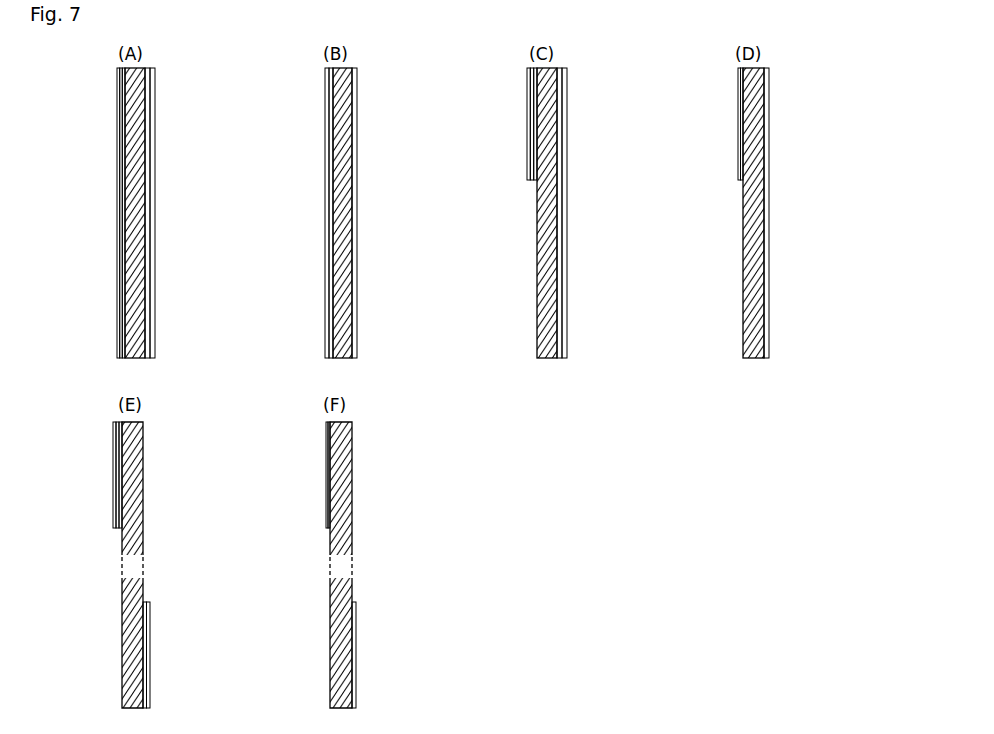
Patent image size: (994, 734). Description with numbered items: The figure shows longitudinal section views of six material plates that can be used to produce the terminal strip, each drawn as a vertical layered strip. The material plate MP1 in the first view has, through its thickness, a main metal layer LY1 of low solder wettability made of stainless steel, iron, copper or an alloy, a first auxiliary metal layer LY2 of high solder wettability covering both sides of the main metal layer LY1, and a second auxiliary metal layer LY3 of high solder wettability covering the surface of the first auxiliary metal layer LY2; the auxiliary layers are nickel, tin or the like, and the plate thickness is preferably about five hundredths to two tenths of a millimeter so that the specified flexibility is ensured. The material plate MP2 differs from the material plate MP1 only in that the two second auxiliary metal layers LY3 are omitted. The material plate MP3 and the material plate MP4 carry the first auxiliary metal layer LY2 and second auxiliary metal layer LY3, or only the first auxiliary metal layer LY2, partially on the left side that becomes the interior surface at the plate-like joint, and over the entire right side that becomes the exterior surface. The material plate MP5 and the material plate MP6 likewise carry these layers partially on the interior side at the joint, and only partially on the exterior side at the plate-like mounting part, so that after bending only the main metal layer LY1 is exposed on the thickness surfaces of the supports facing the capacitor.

The material plate MP1 is at (116, 102).
The material plate MP2 is at (325, 102).
The material plate MP3 is at (527, 102).
The material plate MP4 is at (738, 102).
The material plate MP5 is at (113, 456).
The material plate MP6 is at (326, 456).
The main metal layer LY1 is at (125, 141).
The first auxiliary metal layer LY2 is at (121, 173).
The second auxiliary metal layer LY3 is at (119, 202).